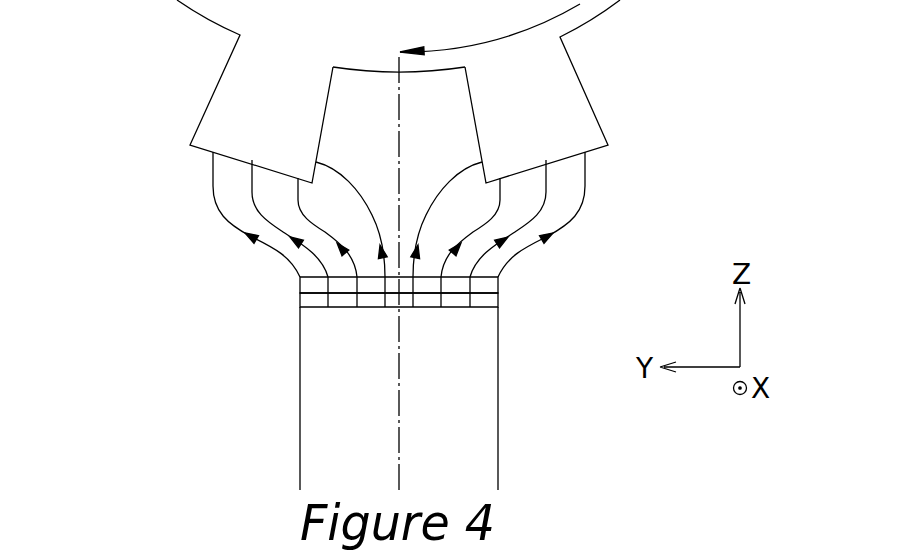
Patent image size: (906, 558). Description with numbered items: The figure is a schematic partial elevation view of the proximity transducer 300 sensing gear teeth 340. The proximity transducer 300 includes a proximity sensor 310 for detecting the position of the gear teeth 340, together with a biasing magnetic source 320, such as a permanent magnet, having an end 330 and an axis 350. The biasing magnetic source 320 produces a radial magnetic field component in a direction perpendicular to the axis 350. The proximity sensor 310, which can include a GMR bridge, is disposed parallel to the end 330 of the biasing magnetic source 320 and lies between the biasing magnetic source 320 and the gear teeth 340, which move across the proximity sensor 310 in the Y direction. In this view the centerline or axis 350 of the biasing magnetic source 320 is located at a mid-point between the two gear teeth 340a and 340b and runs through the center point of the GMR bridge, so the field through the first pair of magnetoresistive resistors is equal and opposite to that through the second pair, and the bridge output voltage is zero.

The proximity transducer 300 is at (429, 245).
The proximity sensor 310 is at (498, 285).
The biasing magnetic source 320 is at (488, 363).
The end 330 is at (498, 303).
The gear teeth 340 is at (400, 91).
The gear tooth 340a is at (568, 90).
The gear tooth 340b is at (227, 95).
The axis 350 is at (399, 408).